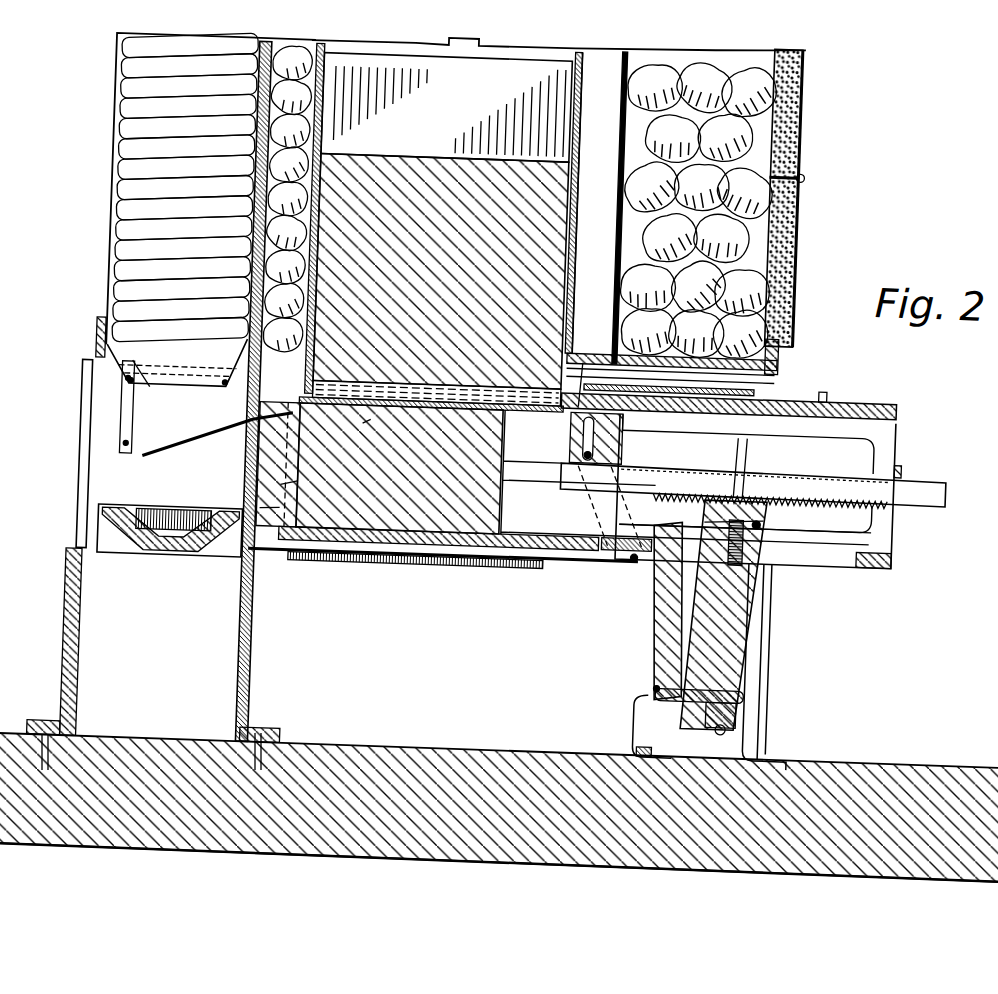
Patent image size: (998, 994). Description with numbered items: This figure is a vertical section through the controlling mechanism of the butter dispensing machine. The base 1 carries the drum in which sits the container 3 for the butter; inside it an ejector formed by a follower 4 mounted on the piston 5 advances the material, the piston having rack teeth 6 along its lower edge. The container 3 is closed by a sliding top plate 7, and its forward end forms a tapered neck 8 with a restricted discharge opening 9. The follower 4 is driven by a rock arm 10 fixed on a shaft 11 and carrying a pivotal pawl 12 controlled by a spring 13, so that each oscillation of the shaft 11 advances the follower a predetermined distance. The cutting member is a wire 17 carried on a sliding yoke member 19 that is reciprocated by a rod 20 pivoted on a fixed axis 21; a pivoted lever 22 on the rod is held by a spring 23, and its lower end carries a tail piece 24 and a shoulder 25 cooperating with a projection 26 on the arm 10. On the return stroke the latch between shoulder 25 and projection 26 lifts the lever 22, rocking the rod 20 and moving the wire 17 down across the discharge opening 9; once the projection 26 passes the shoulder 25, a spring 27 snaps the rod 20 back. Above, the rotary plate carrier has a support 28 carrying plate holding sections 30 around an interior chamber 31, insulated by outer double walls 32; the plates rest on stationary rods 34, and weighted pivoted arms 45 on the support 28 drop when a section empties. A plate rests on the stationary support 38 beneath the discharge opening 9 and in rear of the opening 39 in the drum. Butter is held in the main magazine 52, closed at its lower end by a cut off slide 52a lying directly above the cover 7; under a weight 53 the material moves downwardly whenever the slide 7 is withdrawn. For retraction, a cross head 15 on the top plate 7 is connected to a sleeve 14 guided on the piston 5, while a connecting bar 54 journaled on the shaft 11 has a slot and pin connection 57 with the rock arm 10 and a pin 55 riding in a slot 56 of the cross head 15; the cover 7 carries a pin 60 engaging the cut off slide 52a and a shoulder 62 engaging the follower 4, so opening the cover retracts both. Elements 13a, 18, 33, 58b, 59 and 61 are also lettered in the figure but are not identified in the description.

The base 1 is at (341, 756).
The container 3 is at (687, 478).
The follower 4 is at (493, 481).
The piston 5 is at (689, 473).
The rack teeth 6 is at (811, 489).
The sliding top plate 7 is at (440, 299).
The neck 8 is at (302, 479).
The discharge opening 9 is at (244, 480).
The rock arm 10 is at (731, 615).
The shaft 11 is at (726, 683).
The pivotal pawl 12 is at (738, 510).
The spring 13 is at (748, 534).
The rail 13a is at (718, 422).
The sleeve 14 is at (830, 464).
The cross head 15 is at (608, 443).
The wire 17 is at (247, 434).
The plate 18 is at (299, 492).
The sliding yoke member 19 is at (280, 515).
The rod 20 is at (513, 567).
The fixed axis 21 is at (632, 558).
The pivoted lever 22 is at (658, 606).
The spring 23 is at (648, 538).
The tail piece 24 is at (661, 718).
The shoulder 25 is at (660, 682).
The projection 26 is at (657, 705).
The spring 27 is at (442, 570).
The support 28 is at (89, 354).
The plate holding sections 30 is at (287, 198).
The interior chamber 31 is at (597, 290).
The outer double walls 32 is at (783, 260).
The stones 33 is at (698, 208).
The stationary rods 34 is at (230, 380).
The stationary support 38 is at (174, 567).
The opening 39 is at (82, 487).
The pivoted arms 45 is at (284, 301).
The main magazine 52 is at (600, 207).
The cut off slide 52a is at (683, 400).
The weight 53 is at (446, 108).
The connecting bar 54 is at (598, 497).
The pin 55 is at (583, 452).
The slot 56 is at (580, 425).
The slot and pin connection 57 is at (723, 665).
The bar 58b is at (472, 401).
The stop 59 is at (822, 404).
The pin 60 is at (319, 392).
The rod 61 is at (575, 404).
The shoulder 62 is at (351, 427).